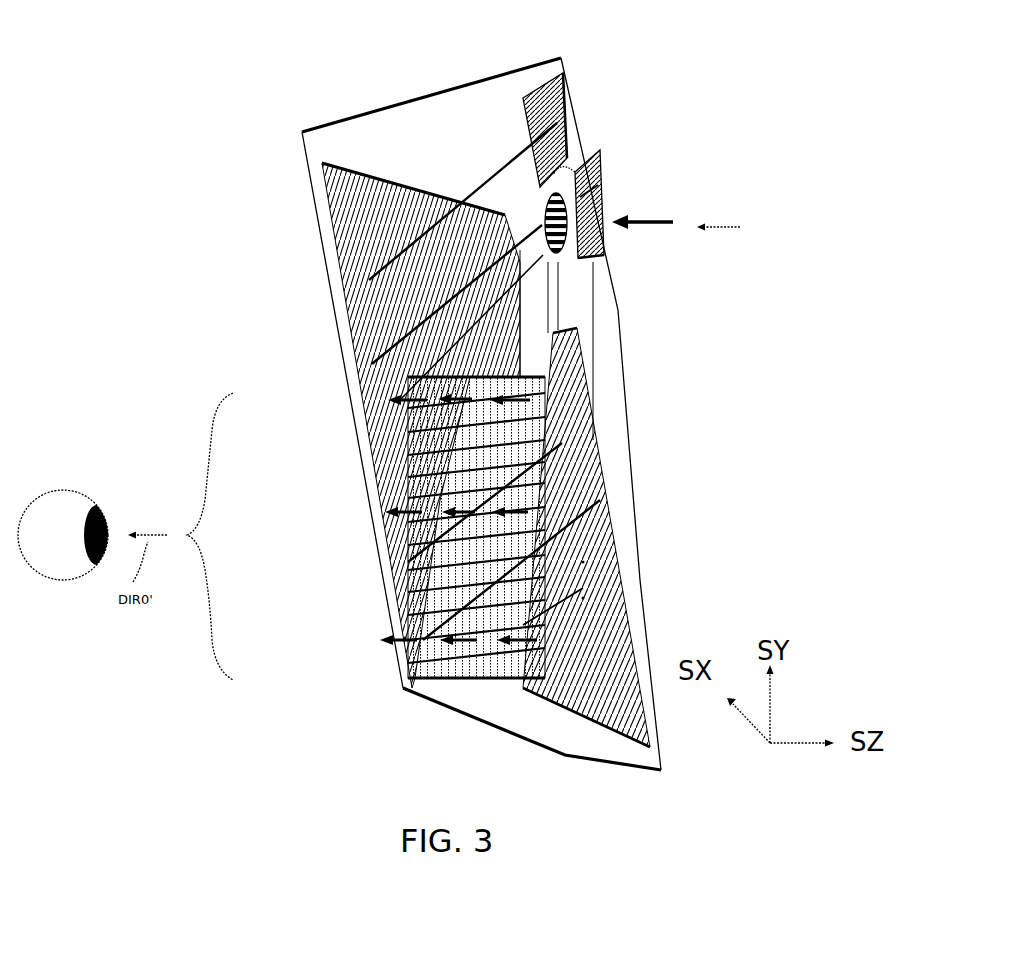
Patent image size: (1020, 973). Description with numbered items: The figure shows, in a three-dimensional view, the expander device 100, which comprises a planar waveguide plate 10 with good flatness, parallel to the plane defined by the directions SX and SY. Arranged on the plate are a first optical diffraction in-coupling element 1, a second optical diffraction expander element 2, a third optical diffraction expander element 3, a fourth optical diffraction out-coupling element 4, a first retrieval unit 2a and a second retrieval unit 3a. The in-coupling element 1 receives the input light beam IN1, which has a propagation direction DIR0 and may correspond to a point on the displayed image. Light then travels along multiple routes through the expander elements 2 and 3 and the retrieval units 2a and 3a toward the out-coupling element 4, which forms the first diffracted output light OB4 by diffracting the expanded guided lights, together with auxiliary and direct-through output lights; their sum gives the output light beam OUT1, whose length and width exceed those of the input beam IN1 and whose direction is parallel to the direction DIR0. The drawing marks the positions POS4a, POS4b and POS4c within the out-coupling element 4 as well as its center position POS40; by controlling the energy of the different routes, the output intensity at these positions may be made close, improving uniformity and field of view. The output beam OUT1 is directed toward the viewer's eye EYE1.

The expander device 100 is at (291, 67).
The planar waveguide plate 10 is at (418, 95).
The second optical diffraction expander element 2 is at (337, 207).
The first retrieval unit 2a is at (553, 80).
The first optical diffraction in-coupling element 1 is at (600, 150).
The second retrieval unit 3a is at (600, 166).
The third optical diffraction expander element 3 is at (583, 476).
The fourth optical diffraction out-coupling element 4 is at (400, 541).
The first diffracted output light OB4 is at (490, 733).
The position POS4a is at (373, 363).
The position POS4b is at (405, 638).
The position POS4c is at (583, 598).
The center position of the out-coupling element POS40 is at (583, 562).
The input light beam IN1 is at (673, 222).
The propagation direction of the input beam DIR0 is at (740, 227).
The eye of viewer EYE1 is at (63, 490).
The output light beam OUT1 is at (146, 522).